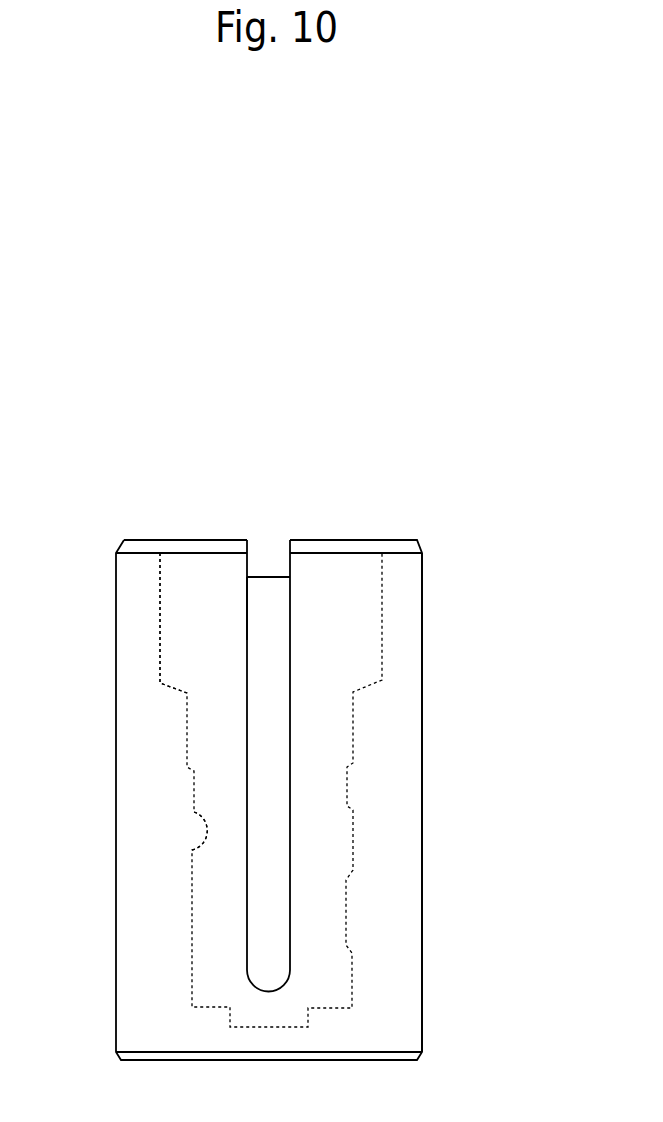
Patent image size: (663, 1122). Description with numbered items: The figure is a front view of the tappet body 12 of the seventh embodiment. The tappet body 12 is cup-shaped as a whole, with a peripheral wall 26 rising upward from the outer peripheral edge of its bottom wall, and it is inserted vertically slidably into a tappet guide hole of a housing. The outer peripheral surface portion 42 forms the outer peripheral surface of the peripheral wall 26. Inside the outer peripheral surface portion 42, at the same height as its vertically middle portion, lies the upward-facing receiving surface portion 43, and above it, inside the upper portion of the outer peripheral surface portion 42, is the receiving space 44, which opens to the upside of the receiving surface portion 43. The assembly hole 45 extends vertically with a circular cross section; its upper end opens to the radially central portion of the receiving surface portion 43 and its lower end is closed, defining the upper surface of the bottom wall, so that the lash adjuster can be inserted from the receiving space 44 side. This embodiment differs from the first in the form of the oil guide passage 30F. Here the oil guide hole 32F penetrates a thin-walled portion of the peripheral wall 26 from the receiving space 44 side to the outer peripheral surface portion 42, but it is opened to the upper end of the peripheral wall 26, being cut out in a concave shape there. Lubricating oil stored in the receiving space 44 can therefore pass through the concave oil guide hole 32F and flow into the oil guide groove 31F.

The tappet body 12 is at (422, 590).
The peripheral wall 26 is at (407, 680).
The outer peripheral surface portion 42 is at (421, 813).
The receiving surface portion 43 is at (177, 688).
The receiving space 44 is at (193, 624).
The assembly hole 45 is at (190, 816).
The oil guide passage 30F is at (326, 470).
The oil guide groove 31F is at (248, 605).
The oil guide hole 32F is at (267, 576).